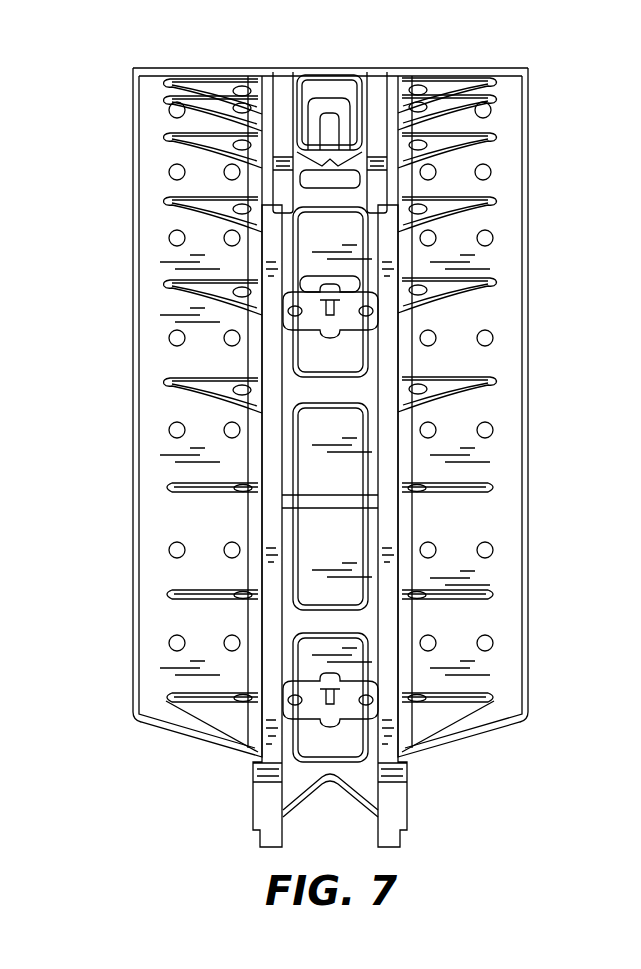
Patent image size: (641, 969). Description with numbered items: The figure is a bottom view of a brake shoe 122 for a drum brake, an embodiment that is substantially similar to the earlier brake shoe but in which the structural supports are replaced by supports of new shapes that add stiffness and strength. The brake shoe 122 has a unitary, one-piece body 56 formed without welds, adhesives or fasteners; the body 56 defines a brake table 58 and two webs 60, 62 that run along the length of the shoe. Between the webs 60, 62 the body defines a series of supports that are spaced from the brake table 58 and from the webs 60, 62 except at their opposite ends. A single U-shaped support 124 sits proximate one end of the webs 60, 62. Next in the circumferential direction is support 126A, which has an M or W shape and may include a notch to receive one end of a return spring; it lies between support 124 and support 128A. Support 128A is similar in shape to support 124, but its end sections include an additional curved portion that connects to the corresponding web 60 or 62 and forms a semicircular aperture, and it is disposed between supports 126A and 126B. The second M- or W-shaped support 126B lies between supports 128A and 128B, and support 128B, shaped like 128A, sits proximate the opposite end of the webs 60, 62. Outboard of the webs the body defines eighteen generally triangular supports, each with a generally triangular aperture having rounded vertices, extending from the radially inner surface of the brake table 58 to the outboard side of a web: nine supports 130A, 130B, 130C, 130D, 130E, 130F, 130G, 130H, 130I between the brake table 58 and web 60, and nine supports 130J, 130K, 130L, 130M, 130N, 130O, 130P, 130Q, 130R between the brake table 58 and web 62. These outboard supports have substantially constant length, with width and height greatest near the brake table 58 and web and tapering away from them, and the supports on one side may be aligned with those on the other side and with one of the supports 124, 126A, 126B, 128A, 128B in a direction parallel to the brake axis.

The body 56 is at (160, 523).
The brake table 58 is at (508, 316).
The web 60 is at (226, 553).
The web 62 is at (385, 512).
The brake shoe 122 is at (160, 437).
The support 124 is at (340, 108).
The support 126A is at (327, 160).
The support 126B is at (316, 498).
The support 128A is at (348, 322).
The support 128B is at (313, 702).
The support 130A is at (225, 80).
The support 130B is at (182, 95).
The support 130C is at (175, 148).
The support 130D is at (168, 200).
The support 130E is at (182, 285).
The support 130F is at (172, 382).
The support 130G is at (162, 487).
The support 130H is at (166, 596).
The support 130I is at (195, 700).
The support 130J is at (477, 70).
The support 130K is at (497, 92).
The support 130L is at (497, 128).
The support 130M is at (472, 203).
The support 130N is at (472, 281).
The support 130O is at (472, 383).
The support 130P is at (472, 487).
The support 130Q is at (462, 594).
The support 130R is at (462, 698).